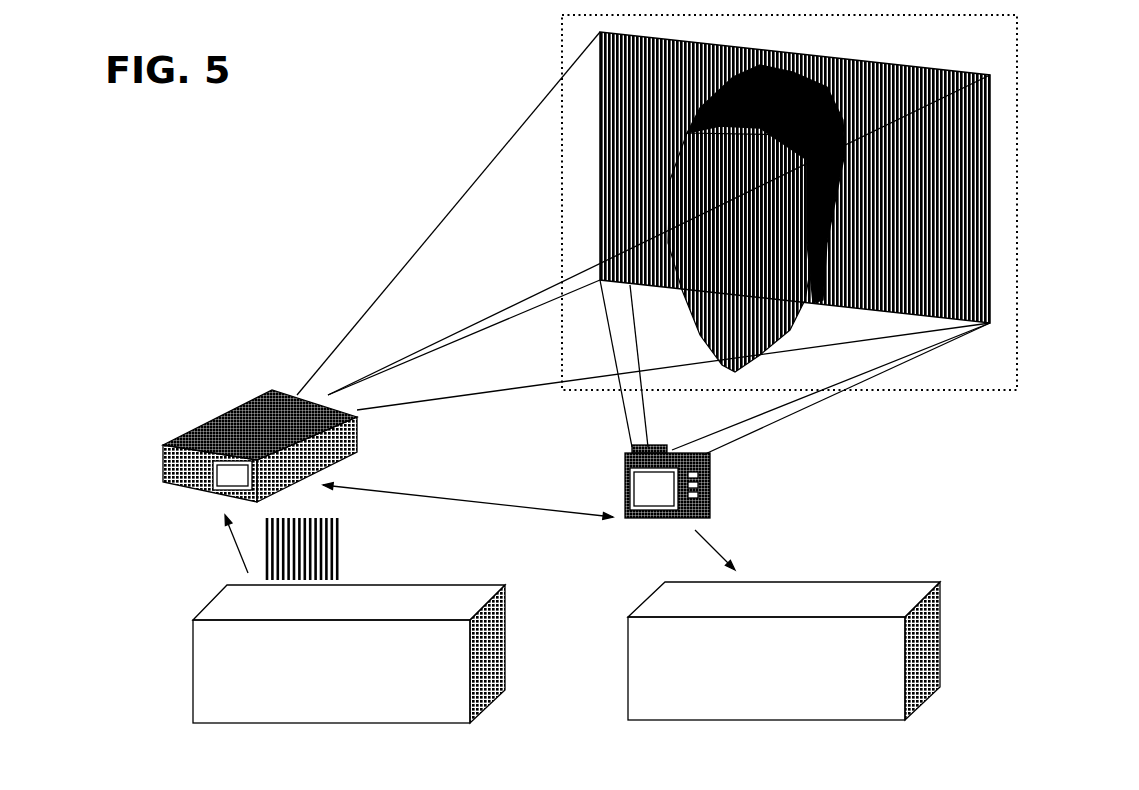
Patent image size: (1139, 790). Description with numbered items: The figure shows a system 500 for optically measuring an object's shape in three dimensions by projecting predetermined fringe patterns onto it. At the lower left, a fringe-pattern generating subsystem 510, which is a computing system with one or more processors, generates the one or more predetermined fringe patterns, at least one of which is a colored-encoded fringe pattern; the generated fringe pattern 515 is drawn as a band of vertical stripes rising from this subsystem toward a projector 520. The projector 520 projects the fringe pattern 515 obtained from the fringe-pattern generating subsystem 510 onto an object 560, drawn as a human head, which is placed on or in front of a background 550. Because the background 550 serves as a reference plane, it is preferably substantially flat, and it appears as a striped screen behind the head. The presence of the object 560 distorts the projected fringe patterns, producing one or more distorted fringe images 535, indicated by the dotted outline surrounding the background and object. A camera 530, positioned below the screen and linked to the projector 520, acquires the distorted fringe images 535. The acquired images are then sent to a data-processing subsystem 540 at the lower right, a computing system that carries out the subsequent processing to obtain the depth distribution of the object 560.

The system 500 is at (105, 230).
The fringe-pattern generating subsystem 510 is at (207, 675).
The fringe pattern 515 is at (332, 567).
The projector 520 is at (177, 477).
The camera 530 is at (705, 502).
The distorted fringe image 535 is at (923, 392).
The data-processing subsystem 540 is at (880, 647).
The background 550 is at (955, 203).
The object 560 is at (700, 195).